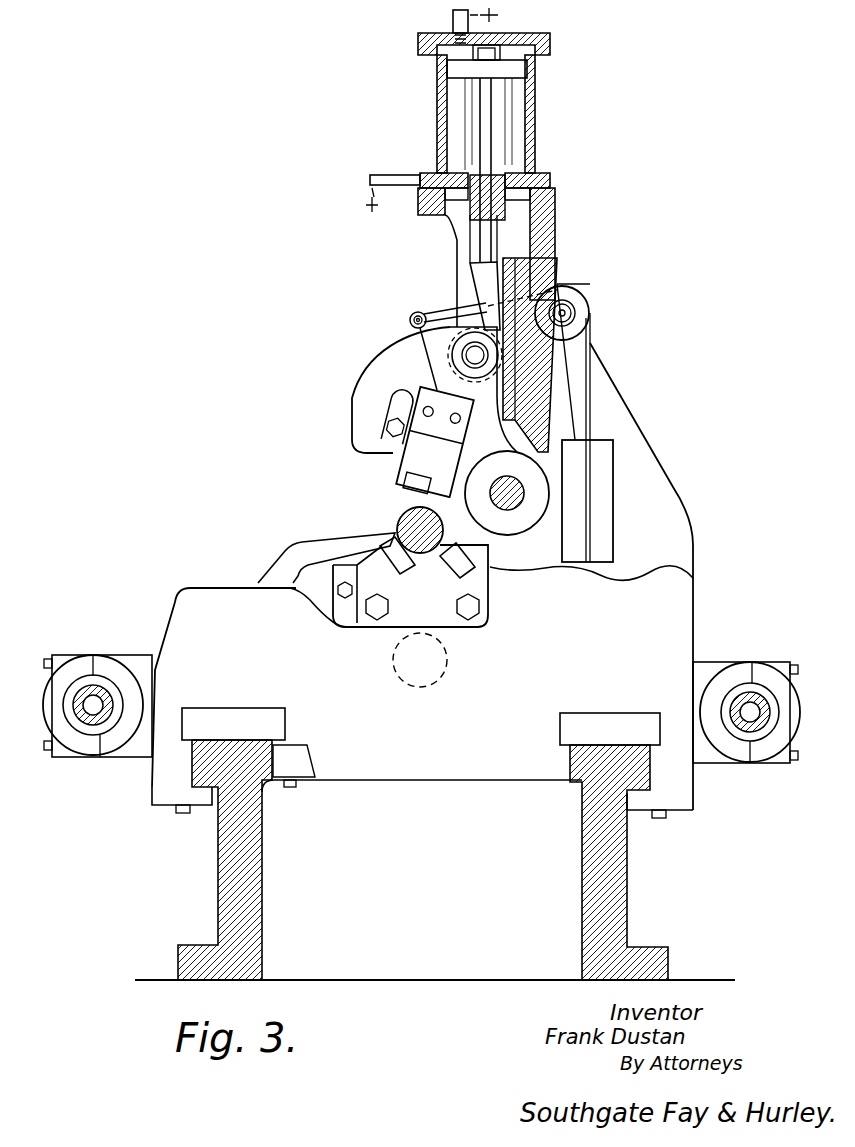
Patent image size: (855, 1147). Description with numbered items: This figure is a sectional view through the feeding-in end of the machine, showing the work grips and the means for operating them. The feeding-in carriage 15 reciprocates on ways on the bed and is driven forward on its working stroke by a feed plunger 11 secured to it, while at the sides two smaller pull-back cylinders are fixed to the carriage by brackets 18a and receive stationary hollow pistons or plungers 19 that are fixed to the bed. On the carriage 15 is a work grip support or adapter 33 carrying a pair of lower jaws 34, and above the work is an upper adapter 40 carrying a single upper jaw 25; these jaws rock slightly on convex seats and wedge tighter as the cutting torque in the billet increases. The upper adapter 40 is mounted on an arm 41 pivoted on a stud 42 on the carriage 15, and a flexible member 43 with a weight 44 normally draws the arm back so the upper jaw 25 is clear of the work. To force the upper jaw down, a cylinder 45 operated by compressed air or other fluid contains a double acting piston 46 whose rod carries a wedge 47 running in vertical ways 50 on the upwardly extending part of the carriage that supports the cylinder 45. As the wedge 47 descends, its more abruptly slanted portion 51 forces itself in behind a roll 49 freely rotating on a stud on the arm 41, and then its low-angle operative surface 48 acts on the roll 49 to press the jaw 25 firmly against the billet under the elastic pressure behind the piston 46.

The feed plunger 11 is at (425, 688).
The carriage 15 is at (678, 552).
The brackets 18a is at (728, 640).
The stationary hollow pistons or plungers 19 is at (102, 722).
The upper jaw 25 is at (416, 484).
The work grip support or adapter 33 is at (442, 612).
The lower jaws 34 is at (445, 560).
The upper adapter 40 is at (437, 462).
The arm 41 is at (390, 358).
The stud 42 is at (515, 503).
The flexible member 43 is at (590, 367).
The weight 44 is at (608, 483).
The cylinder 45 is at (540, 105).
The double acting piston 46 is at (507, 68).
The wedge 47 is at (482, 275).
The operative surface 48 is at (472, 288).
The roll 49 is at (452, 372).
The ways 50 is at (530, 340).
The abruptly slanted portion 51 is at (519, 310).